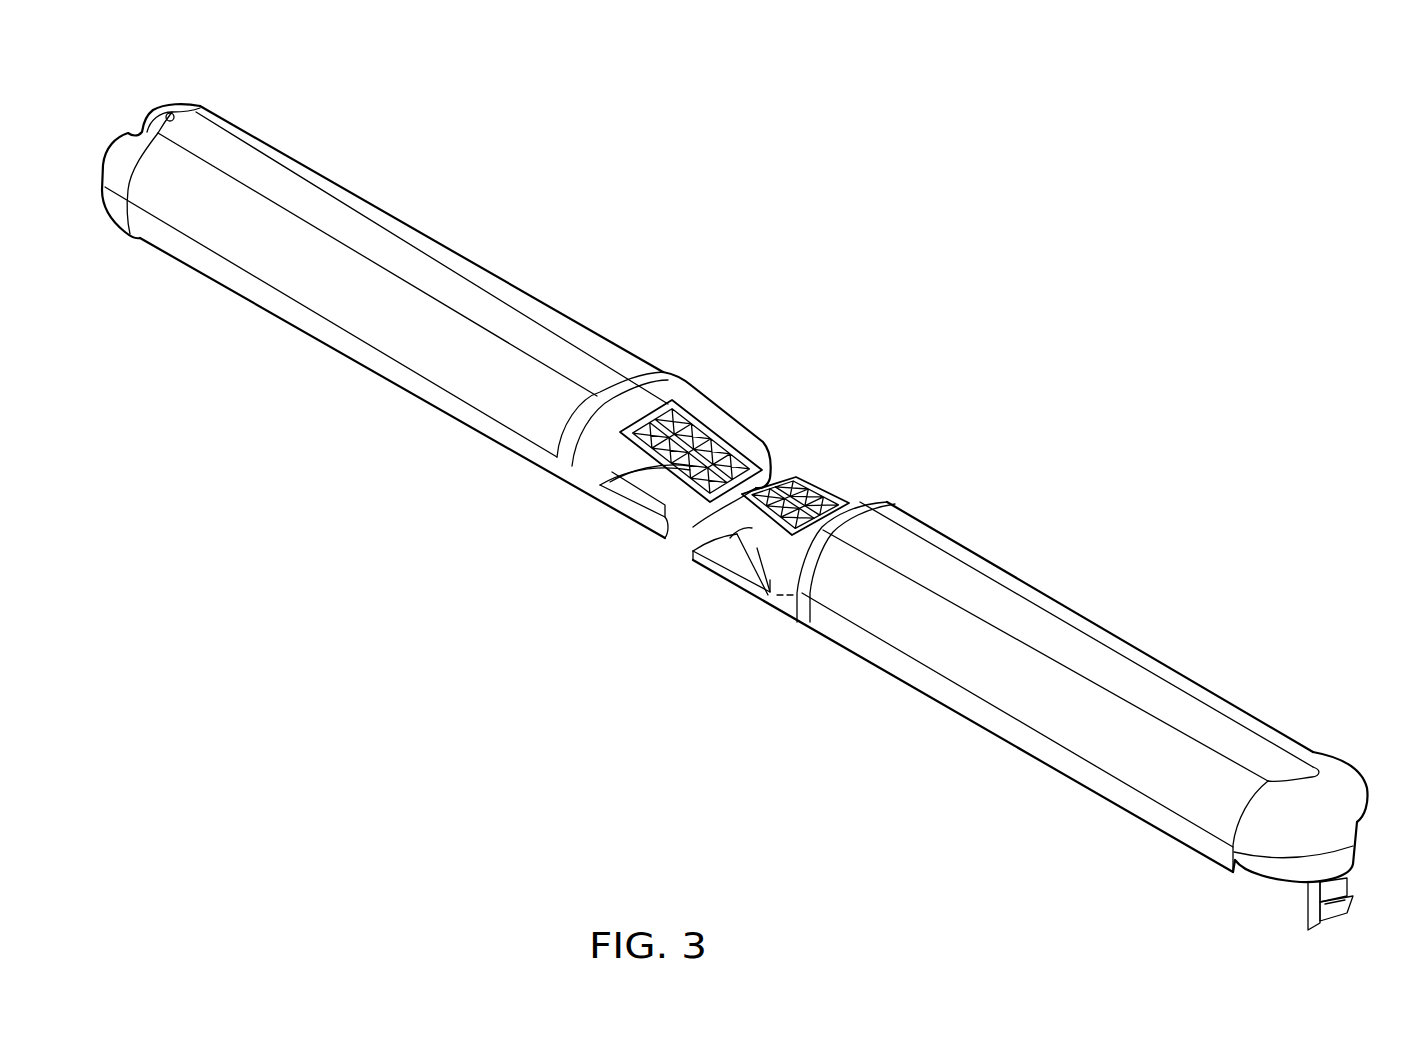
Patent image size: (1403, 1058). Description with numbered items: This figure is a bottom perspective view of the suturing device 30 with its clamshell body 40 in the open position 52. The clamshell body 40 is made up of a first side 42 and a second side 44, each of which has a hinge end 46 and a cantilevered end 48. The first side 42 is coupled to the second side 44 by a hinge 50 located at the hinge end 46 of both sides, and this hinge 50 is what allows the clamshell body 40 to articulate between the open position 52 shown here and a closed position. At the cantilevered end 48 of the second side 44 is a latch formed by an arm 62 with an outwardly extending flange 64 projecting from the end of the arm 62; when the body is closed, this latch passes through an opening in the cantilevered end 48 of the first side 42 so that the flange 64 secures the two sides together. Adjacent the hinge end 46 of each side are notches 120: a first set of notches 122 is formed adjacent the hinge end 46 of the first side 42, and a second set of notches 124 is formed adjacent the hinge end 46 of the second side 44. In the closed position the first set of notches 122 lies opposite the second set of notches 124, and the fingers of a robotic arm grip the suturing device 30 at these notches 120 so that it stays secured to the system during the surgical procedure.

The suturing device 30 is at (632, 293).
The clamshell body 40 is at (314, 173).
The first side 42 is at (187, 216).
The second side 44 is at (992, 600).
The hinge end 46 is at (645, 537).
The cantilevered end 48 is at (189, 108).
The hinge 50 is at (768, 480).
The open position 52 is at (369, 465).
The arm 62 is at (1338, 887).
The outwardly extending flange 64 is at (1333, 915).
The notches 120 is at (677, 422).
The first set of notches 122 is at (672, 472).
The second set of notches 124 is at (797, 496).